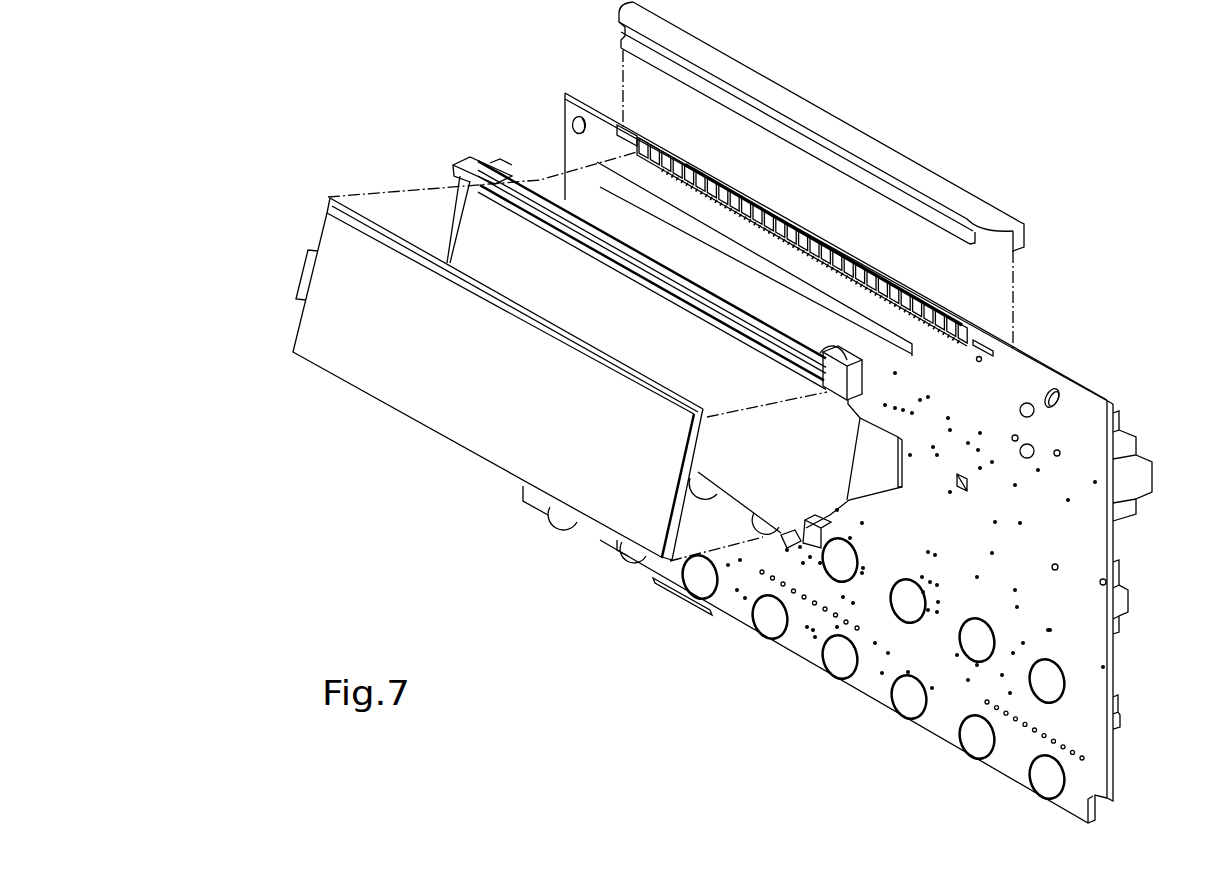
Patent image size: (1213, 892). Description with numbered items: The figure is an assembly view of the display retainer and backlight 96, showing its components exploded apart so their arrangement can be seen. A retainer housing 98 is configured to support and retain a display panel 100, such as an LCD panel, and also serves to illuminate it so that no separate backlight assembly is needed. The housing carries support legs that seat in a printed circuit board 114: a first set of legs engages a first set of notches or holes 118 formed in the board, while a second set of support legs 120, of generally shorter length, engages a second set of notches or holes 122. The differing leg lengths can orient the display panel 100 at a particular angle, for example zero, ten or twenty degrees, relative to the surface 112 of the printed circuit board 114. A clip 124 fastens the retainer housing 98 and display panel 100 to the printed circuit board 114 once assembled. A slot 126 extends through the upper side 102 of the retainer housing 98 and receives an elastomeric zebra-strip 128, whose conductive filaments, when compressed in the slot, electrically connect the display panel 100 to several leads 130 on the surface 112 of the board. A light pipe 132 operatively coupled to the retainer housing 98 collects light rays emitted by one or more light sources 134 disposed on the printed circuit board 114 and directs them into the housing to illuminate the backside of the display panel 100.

The display retainer and backlight 96 is at (406, 141).
The retainer housing 98 is at (765, 557).
The display panel 100 is at (323, 332).
The upper side of retainer housing 102 is at (538, 172).
The surface of the printed circuit board 112 is at (1075, 611).
The printed circuit board 114 is at (1093, 708).
The first set of notches or holes 118 is at (970, 484).
The second set of support legs 120 is at (491, 160).
The second set of notches or holes 122 is at (619, 127).
The clip 124 is at (975, 208).
The slot 126 is at (520, 206).
The elastomeric zebra-strip 128 is at (905, 358).
The leads 130 is at (722, 187).
The light pipe 132 is at (863, 483).
The light sources 134 is at (1033, 445).